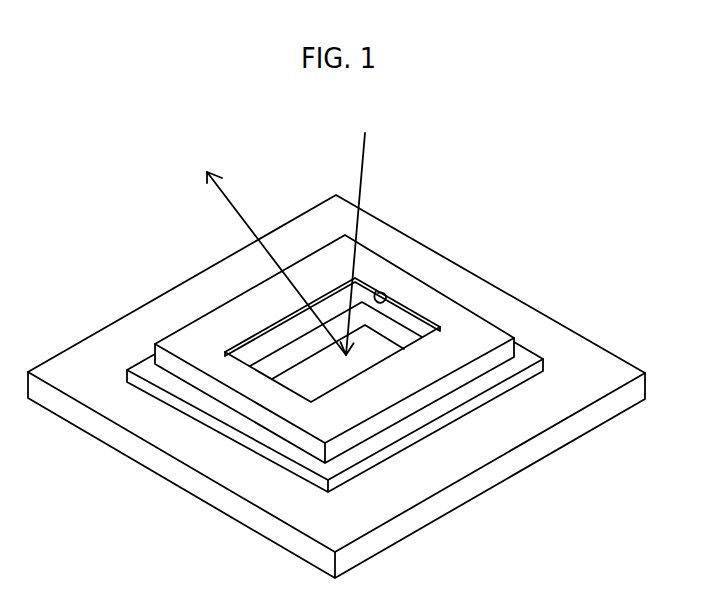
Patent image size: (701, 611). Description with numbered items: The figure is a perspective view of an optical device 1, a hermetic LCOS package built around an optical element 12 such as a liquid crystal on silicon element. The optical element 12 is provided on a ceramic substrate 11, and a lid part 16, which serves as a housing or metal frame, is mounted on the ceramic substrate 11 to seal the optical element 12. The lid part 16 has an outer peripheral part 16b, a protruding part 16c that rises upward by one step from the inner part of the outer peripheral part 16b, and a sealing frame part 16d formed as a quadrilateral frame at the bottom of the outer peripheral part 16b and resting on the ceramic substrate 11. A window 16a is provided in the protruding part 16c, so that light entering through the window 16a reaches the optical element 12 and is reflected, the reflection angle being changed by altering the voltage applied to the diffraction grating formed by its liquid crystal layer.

The optical device 1 is at (637, 198).
The ceramic substrate 11 is at (603, 357).
The optical element 12 is at (377, 345).
The lid part 16 is at (602, 235).
The window 16a is at (376, 291).
The outer peripheral part 16b is at (525, 352).
The protruding part 16c is at (497, 327).
The sealing frame part 16d is at (541, 361).